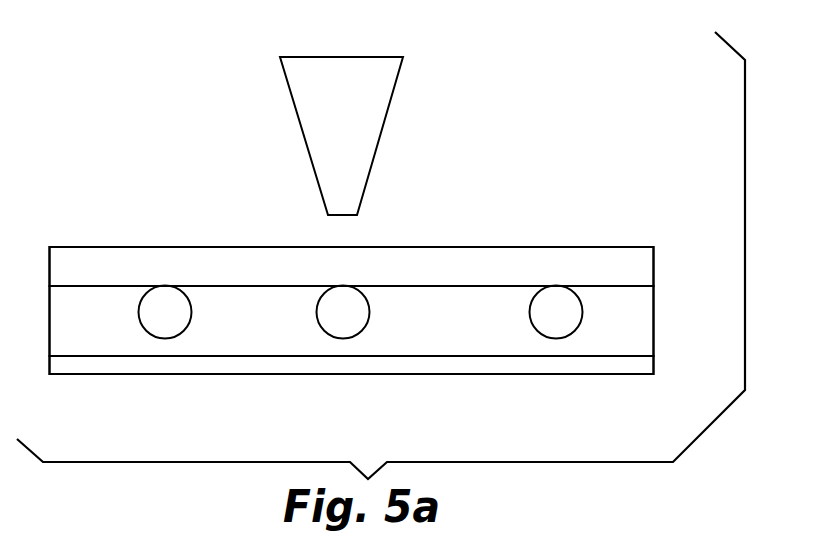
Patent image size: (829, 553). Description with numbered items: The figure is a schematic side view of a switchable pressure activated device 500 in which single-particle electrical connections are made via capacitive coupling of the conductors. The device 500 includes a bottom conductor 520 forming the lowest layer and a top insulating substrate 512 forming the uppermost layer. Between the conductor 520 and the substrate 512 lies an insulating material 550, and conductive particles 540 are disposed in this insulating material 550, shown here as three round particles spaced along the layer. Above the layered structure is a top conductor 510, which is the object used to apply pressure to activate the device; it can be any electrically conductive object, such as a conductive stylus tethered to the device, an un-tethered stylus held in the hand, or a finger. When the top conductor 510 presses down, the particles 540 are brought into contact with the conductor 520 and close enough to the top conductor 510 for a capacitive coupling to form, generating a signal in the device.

The switchable pressure activated device 500 is at (594, 194).
The top conductor 510 is at (377, 103).
The top insulating substrate 512 is at (88, 260).
The bottom conductor 520 is at (83, 367).
The conductive particles 540 is at (165, 300).
The insulating material 550 is at (642, 304).